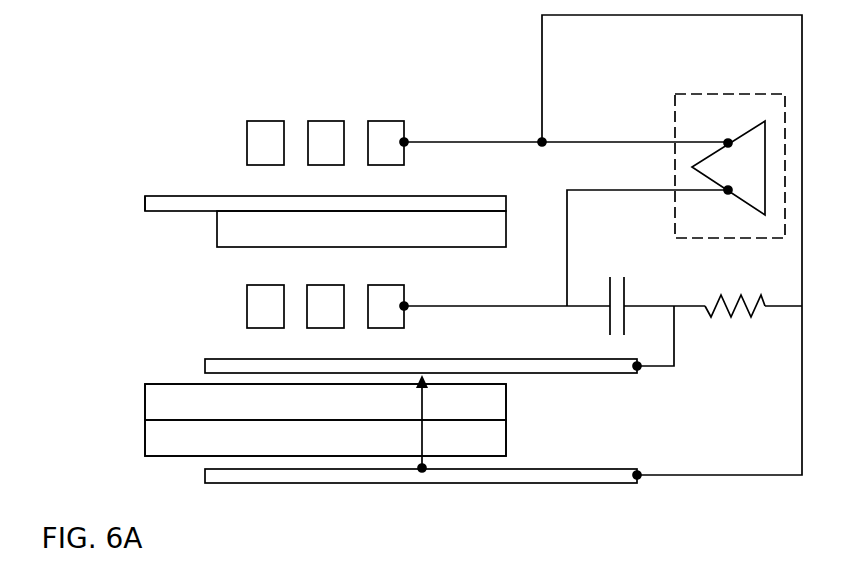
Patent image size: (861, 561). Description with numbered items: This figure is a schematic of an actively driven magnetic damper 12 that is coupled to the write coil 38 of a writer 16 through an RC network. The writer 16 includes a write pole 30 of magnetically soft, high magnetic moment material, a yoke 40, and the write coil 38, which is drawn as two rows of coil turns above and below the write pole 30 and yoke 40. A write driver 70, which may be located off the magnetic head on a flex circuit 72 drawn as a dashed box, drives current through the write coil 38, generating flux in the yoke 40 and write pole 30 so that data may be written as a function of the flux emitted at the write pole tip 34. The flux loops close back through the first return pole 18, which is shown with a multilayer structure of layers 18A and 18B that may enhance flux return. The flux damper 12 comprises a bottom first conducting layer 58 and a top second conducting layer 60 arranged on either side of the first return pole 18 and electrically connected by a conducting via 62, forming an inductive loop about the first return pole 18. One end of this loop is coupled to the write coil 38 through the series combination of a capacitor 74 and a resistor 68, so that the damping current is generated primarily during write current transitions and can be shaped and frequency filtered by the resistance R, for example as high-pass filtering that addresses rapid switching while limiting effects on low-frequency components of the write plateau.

The magnetic damper 12 is at (662, 417).
The writer 16 is at (122, 112).
The first return pole 18 is at (134, 375).
The layer of first return pole 18A is at (302, 416).
The layer of first return pole 18B is at (325, 453).
The write pole 30 is at (432, 205).
The write pole tip 34 is at (143, 202).
The write coil 38 is at (258, 149).
The yoke 40 is at (347, 240).
The first conducting layer 58 is at (260, 482).
The second conducting layer 60 is at (238, 360).
The conducting via 62 is at (423, 438).
The resistor 68 is at (750, 340).
The write driver 70 is at (723, 180).
The flex circuit 72 is at (663, 79).
The capacitor 74 is at (607, 258).